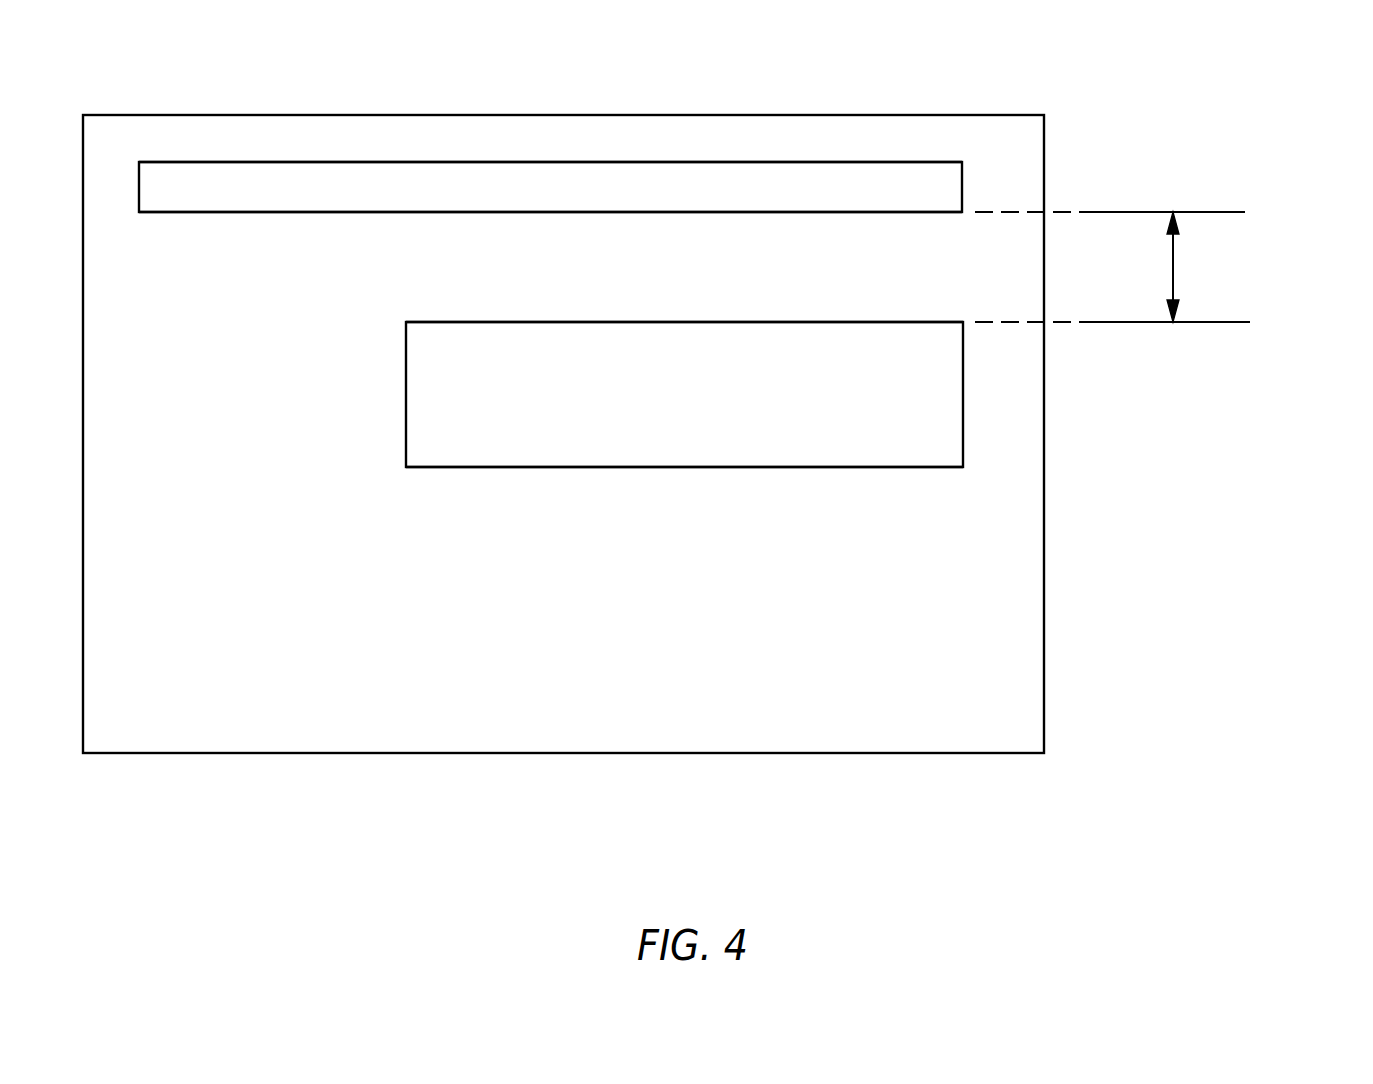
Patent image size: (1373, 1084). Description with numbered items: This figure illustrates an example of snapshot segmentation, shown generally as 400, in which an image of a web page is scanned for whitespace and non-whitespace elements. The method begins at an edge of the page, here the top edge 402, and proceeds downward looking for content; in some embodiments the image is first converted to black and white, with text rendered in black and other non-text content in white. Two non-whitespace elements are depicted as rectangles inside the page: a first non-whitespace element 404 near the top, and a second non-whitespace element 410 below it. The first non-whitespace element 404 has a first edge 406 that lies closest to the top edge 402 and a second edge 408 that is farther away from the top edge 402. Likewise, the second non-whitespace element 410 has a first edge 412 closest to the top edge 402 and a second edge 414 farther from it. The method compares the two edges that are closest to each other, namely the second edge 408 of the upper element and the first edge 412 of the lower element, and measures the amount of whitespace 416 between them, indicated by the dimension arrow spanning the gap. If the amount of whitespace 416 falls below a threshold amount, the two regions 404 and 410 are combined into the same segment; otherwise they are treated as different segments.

The snapshot segmentation 400 is at (1295, 115).
The top edge 402 is at (477, 114).
The first non-whitespace element 404 is at (963, 185).
The first edge 406 is at (718, 160).
The second edge 408 is at (698, 212).
The second non-whitespace element 410 is at (963, 392).
The first edge 412 is at (813, 321).
The second edge 414 is at (758, 467).
The amount of whitespace 416 is at (1175, 292).